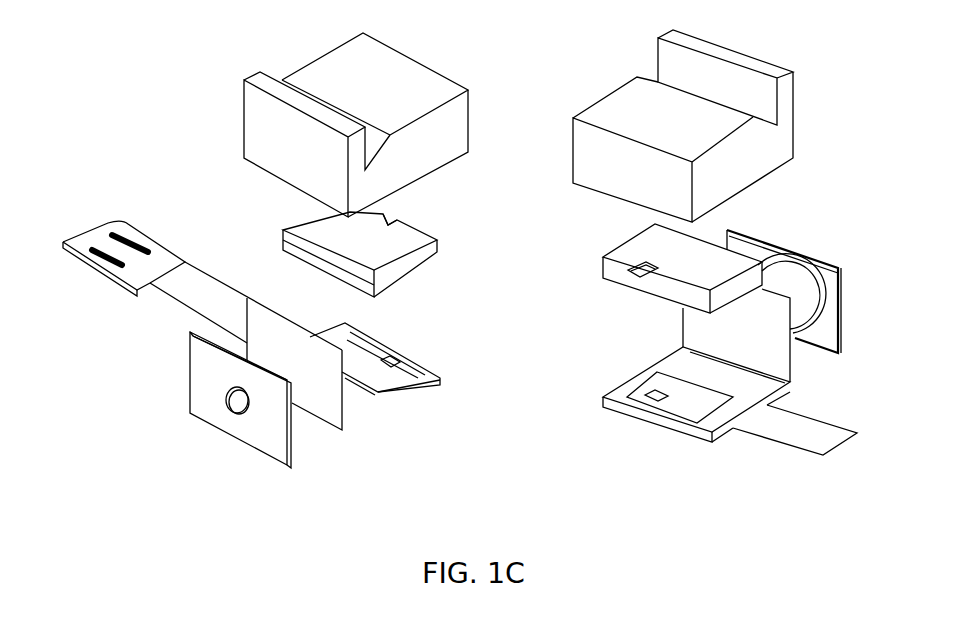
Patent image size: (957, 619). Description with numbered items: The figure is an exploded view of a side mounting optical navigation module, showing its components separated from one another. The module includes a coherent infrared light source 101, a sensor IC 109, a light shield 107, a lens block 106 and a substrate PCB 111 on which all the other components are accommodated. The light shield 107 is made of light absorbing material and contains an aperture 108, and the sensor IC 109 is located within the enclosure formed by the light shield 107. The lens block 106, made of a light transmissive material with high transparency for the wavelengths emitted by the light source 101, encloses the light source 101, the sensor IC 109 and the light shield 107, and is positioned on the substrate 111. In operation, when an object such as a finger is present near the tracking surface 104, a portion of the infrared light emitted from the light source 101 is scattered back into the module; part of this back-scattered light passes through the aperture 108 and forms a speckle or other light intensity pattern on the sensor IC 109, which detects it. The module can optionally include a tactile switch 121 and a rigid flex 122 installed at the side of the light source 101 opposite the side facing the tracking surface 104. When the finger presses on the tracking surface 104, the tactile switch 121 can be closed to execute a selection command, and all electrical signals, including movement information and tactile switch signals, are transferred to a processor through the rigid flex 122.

The coherent infrared light source 101 is at (697, 371).
The tracking surface 104 is at (618, 168).
The lens block 106 is at (643, 107).
The light shield 107 is at (395, 245).
The aperture 108 is at (643, 272).
The sensor IC 109 is at (645, 393).
The substrate PCB 111 is at (362, 403).
The tactile switch 121 is at (217, 413).
The rigid flex 122 is at (190, 292).